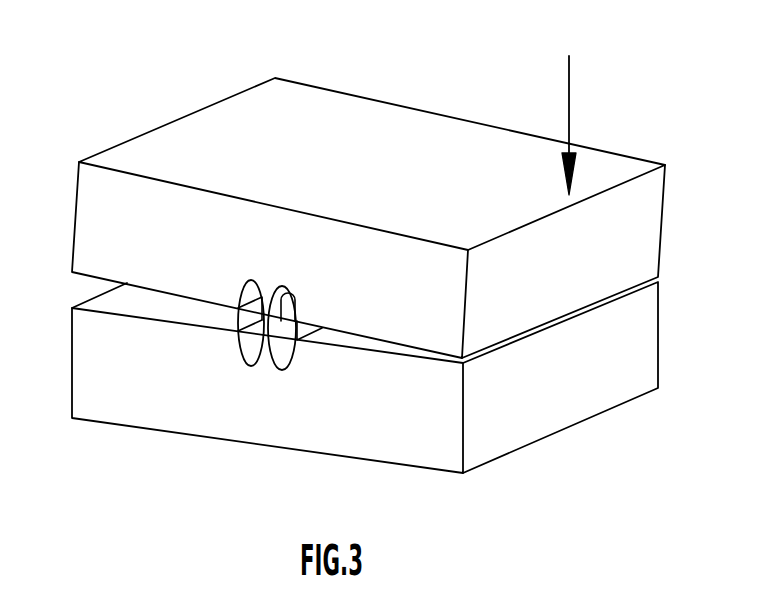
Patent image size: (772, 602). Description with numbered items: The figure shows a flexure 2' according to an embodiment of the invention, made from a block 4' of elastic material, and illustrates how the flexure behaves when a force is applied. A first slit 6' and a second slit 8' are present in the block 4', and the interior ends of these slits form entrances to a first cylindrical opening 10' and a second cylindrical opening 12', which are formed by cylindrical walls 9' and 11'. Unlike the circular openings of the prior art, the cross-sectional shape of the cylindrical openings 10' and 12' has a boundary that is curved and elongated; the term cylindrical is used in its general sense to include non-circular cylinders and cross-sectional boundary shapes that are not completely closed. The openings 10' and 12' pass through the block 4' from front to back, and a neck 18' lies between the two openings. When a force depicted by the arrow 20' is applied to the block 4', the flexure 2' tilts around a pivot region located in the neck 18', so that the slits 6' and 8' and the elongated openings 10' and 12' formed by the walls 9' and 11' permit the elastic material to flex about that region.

The flexure 2' is at (374, 240).
The block 4' is at (386, 218).
The first slit 6' is at (391, 361).
The second slit 8' is at (82, 297).
The cylindrical wall 9' is at (311, 285).
The first cylindrical opening 10' is at (307, 363).
The cylindrical wall 11' is at (234, 278).
The second cylindrical opening 12' is at (228, 359).
The neck 18' is at (267, 355).
The arrow 20' is at (608, 125).